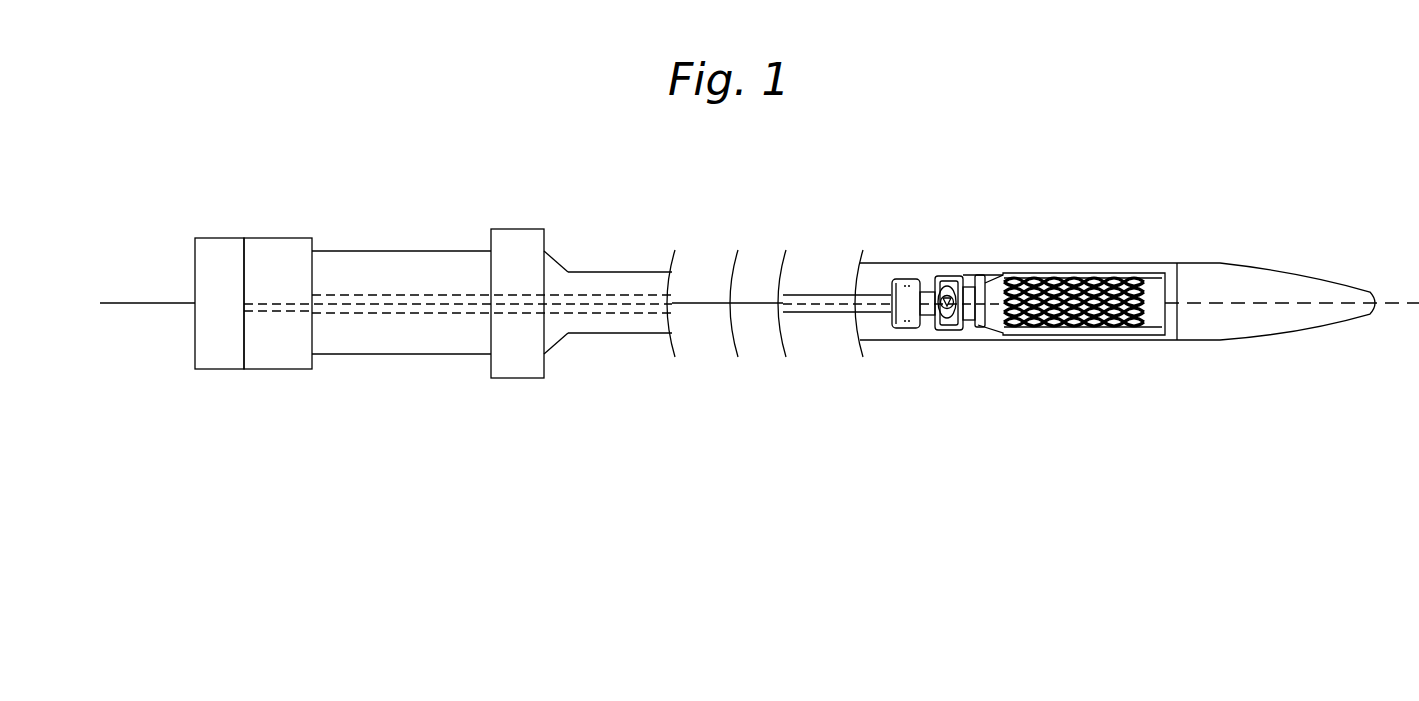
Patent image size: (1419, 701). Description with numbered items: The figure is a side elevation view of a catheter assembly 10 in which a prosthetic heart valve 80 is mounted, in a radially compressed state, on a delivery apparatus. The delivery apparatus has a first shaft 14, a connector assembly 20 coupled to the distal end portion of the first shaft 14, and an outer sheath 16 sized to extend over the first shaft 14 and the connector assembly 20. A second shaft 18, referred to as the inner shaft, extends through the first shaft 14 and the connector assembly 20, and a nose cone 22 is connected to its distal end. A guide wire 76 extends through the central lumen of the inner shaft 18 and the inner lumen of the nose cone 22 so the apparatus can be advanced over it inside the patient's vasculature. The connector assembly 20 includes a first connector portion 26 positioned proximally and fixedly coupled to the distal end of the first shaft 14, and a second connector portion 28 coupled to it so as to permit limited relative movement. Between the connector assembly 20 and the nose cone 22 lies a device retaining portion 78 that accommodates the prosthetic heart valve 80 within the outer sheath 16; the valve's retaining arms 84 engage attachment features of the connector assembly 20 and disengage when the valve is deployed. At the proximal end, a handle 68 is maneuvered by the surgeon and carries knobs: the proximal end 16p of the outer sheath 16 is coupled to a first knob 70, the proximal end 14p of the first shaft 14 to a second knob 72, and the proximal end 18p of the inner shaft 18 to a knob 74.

The catheter assembly 10 is at (975, 146).
The first shaft 14 is at (560, 314).
The proximal end of the first shaft 14p is at (335, 314).
The outer sheath 16 is at (627, 271).
The proximal end of the outer sheath 16p is at (549, 250).
The second shaft 18 is at (618, 306).
The proximal end of the inner shaft 18p is at (262, 304).
The connector assembly 20 is at (905, 266).
The nose cone 22 is at (1225, 262).
The first connector portion 26 is at (908, 333).
The second connector portion 28 is at (948, 334).
The handle 68 is at (372, 253).
The first knob 70 is at (520, 236).
The second knob 72 is at (282, 248).
The knob 74 is at (220, 248).
The guide wire 76 is at (173, 303).
The device retaining portion 78 is at (1088, 337).
The prosthetic heart valve 80 is at (1093, 290).
The retaining arms 84 is at (969, 280).